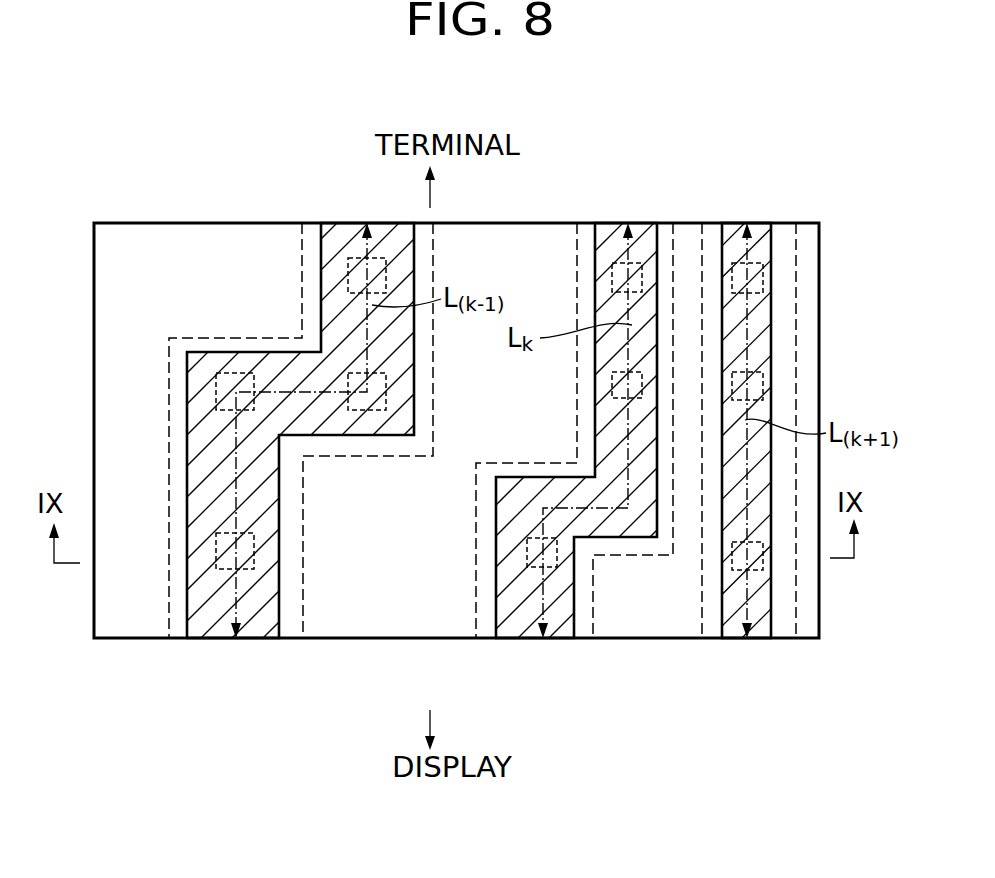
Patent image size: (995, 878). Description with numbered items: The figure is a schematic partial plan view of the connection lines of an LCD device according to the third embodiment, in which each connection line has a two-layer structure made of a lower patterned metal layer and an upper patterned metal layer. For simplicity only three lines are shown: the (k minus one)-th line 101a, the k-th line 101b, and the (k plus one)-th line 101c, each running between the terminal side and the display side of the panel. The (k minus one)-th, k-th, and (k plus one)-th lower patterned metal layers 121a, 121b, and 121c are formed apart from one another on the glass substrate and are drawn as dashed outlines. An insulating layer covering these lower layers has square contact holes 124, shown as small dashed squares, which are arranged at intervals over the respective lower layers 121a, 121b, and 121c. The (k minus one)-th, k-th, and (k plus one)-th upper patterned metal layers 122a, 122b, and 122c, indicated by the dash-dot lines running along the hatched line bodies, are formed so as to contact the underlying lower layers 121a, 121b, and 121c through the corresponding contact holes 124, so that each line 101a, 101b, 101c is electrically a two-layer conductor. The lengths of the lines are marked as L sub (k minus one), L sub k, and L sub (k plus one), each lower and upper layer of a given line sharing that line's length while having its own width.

The (k−1)-th connection line 101a is at (256, 700).
The k-th connection line 101b is at (571, 704).
The (k+1)-th connection line 101c is at (769, 703).
The (k−1)-th lower patterned metal layer 121a is at (185, 640).
The k-th lower patterned metal layer 121b is at (485, 640).
The (k+1)-th lower patterned metal layer 121c is at (712, 640).
The (k−1)-th upper patterned metal layer 122a is at (258, 639).
The k-th upper patterned metal layer 122b is at (534, 639).
The (k+1)-th upper patterned metal layer 122c is at (758, 639).
The contact holes 124 is at (256, 543).